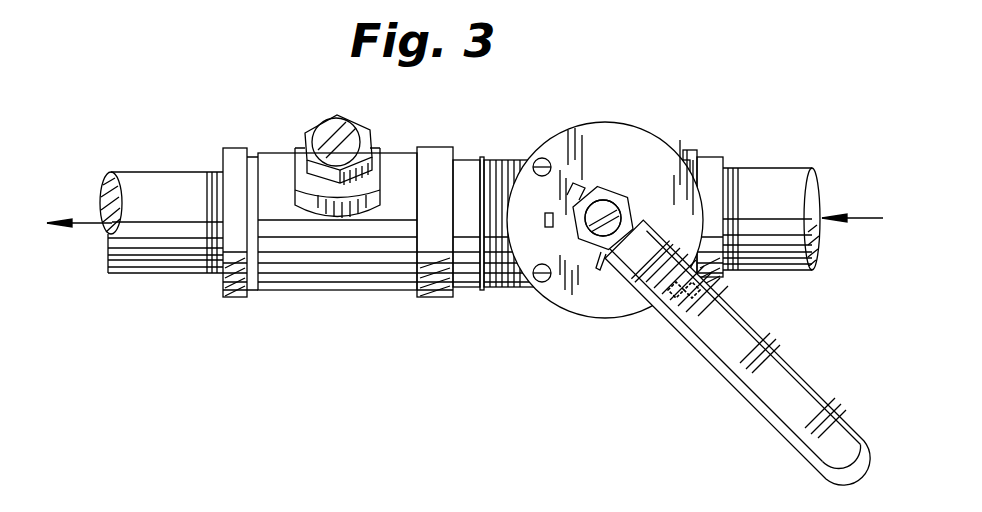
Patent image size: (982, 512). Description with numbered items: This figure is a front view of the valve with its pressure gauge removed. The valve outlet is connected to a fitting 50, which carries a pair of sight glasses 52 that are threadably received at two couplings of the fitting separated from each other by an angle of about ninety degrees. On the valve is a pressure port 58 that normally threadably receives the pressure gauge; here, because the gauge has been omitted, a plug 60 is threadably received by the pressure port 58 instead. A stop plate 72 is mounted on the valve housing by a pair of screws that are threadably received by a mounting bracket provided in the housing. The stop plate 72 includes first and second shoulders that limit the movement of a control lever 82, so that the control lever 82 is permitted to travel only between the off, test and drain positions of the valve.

The fitting 50 is at (340, 290).
The sight glass 52 is at (378, 115).
The pressure port 58 is at (653, 317).
The plug 60 is at (697, 293).
The stop plate 72 is at (641, 137).
The control lever 82 is at (790, 443).